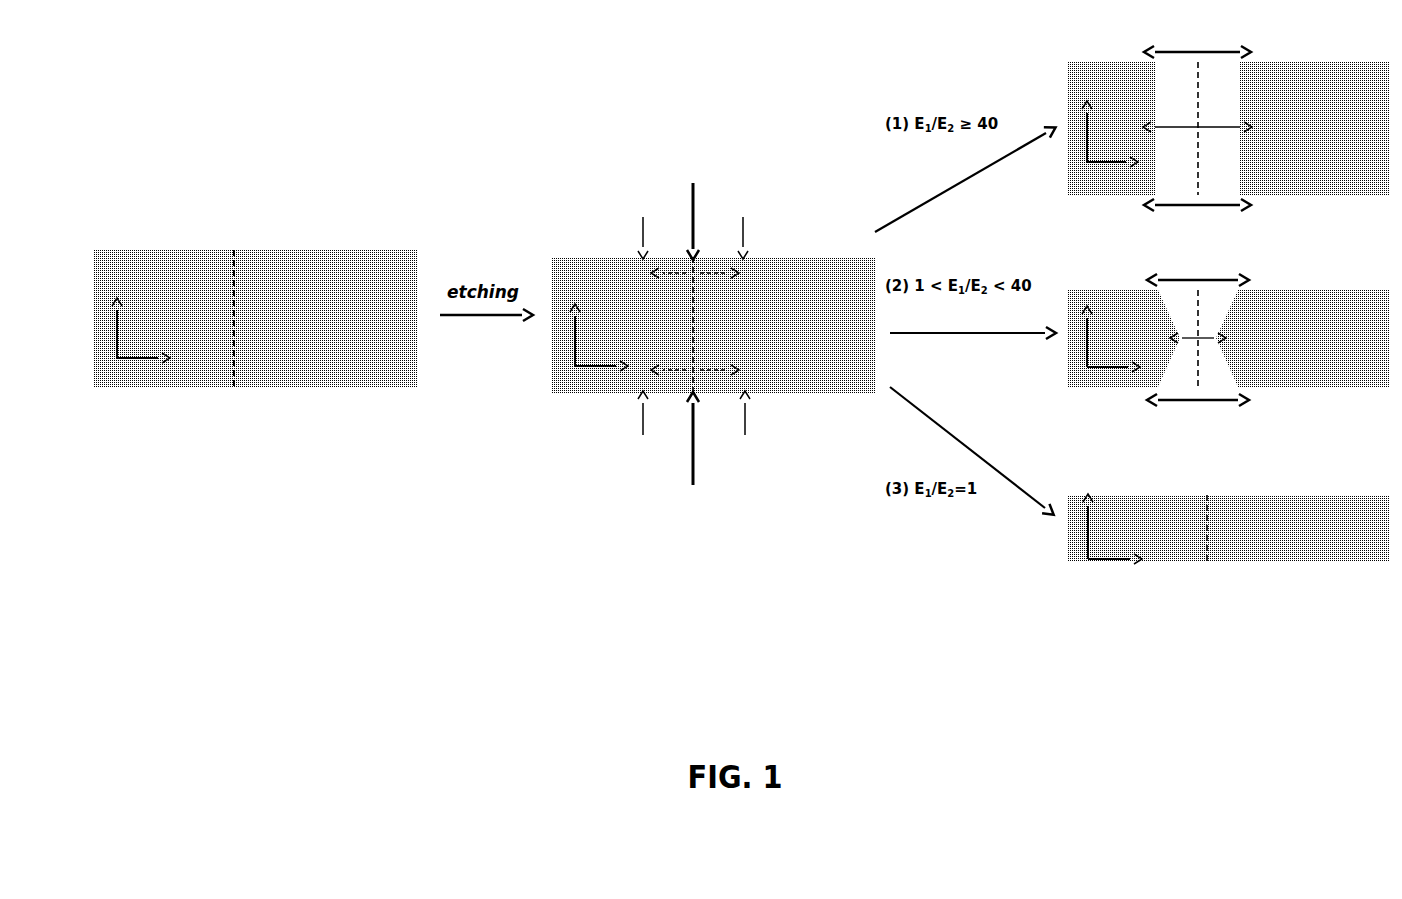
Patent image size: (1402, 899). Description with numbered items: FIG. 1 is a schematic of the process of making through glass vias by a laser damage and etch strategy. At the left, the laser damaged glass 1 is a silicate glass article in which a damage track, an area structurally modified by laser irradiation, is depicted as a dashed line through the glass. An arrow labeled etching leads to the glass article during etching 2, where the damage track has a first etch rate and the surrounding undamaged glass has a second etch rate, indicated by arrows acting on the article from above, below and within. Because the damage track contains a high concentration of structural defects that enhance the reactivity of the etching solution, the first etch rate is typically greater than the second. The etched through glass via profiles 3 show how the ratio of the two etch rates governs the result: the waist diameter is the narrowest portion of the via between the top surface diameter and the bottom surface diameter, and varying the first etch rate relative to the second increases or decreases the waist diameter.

The laser damaged glass 1 is at (255, 355).
The glass article during etching 2 is at (714, 369).
The etched through glass via profiles 3 is at (1228, 325).